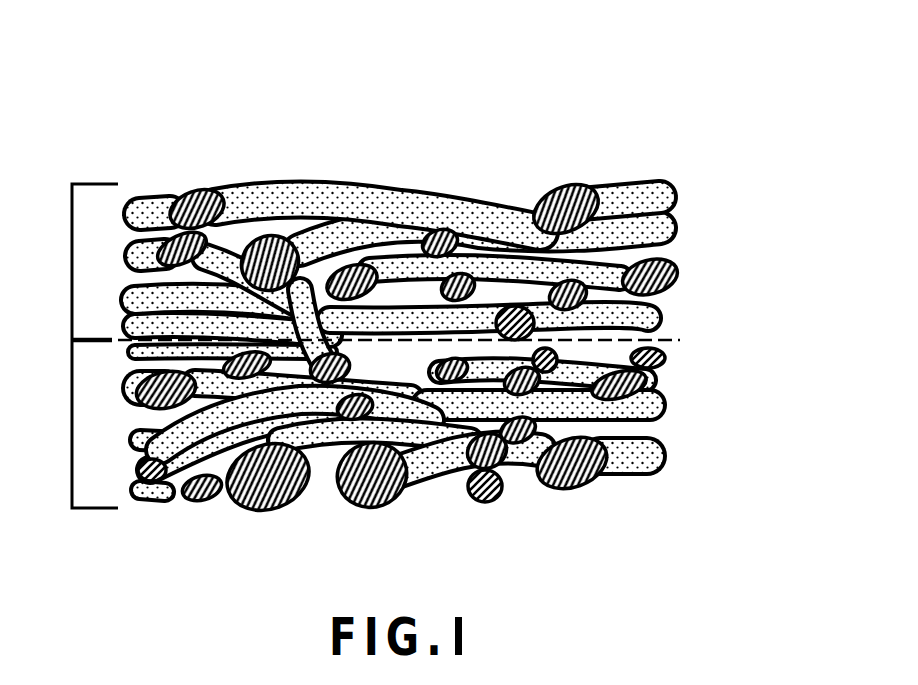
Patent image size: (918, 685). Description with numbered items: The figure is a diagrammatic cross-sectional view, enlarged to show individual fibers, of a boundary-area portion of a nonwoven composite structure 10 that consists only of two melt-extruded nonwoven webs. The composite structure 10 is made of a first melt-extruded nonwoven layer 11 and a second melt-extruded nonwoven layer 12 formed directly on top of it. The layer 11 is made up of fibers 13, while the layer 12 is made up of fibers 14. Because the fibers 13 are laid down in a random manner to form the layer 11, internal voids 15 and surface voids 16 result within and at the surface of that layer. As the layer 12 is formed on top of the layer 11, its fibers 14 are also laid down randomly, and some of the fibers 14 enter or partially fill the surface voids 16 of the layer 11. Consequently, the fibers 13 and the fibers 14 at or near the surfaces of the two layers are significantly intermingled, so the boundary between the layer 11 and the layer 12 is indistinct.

The nonwoven composite structure 10 is at (689, 70).
The melt-extruded nonwoven layer 11 is at (72, 422).
The melt-extruded nonwoven layer 12 is at (72, 262).
The fibers 13 is at (596, 405).
The fibers 14 is at (386, 335).
The internal voids 15 is at (186, 419).
The surface voids 16 is at (642, 316).